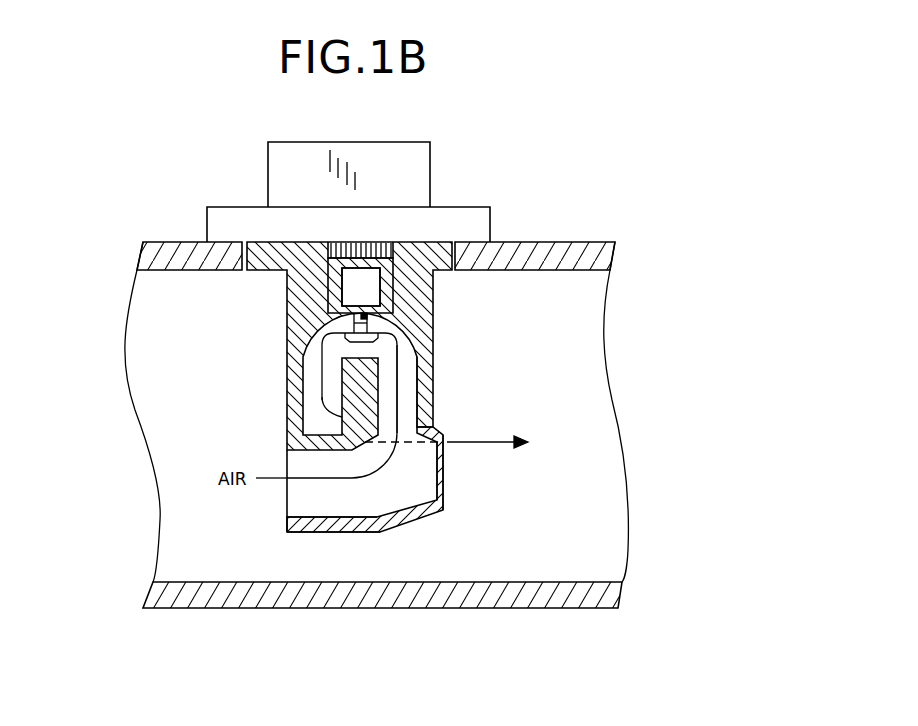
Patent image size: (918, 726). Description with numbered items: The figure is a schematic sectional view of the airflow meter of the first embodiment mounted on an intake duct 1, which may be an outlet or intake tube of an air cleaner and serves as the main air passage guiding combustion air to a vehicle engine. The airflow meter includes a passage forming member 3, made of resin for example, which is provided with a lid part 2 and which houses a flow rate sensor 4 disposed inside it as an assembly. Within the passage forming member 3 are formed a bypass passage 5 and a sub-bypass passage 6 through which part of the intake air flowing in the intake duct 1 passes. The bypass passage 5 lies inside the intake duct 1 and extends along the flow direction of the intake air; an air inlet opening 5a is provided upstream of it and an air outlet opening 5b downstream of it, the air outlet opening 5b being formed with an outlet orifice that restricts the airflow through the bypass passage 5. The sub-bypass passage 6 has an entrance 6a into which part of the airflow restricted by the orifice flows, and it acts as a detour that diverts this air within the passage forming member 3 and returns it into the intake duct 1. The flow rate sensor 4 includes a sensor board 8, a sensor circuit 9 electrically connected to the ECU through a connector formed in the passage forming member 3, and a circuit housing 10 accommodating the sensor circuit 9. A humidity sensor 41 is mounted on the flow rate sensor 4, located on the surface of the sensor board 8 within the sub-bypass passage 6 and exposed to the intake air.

The intake duct 1 is at (166, 242).
The lid part 2 is at (235, 218).
The passage forming member 3 is at (287, 402).
The flow rate sensor 4 is at (312, 282).
The bypass passage 5 is at (363, 503).
The air inlet opening 5a is at (295, 507).
The air outlet opening 5b is at (433, 478).
The sub-bypass passage 6 is at (405, 362).
The entrance 6a is at (405, 415).
The sensor board 8 is at (357, 325).
The sensor circuit 9 is at (368, 282).
The circuit housing 10 is at (407, 297).
The humidity sensor 41 is at (368, 317).